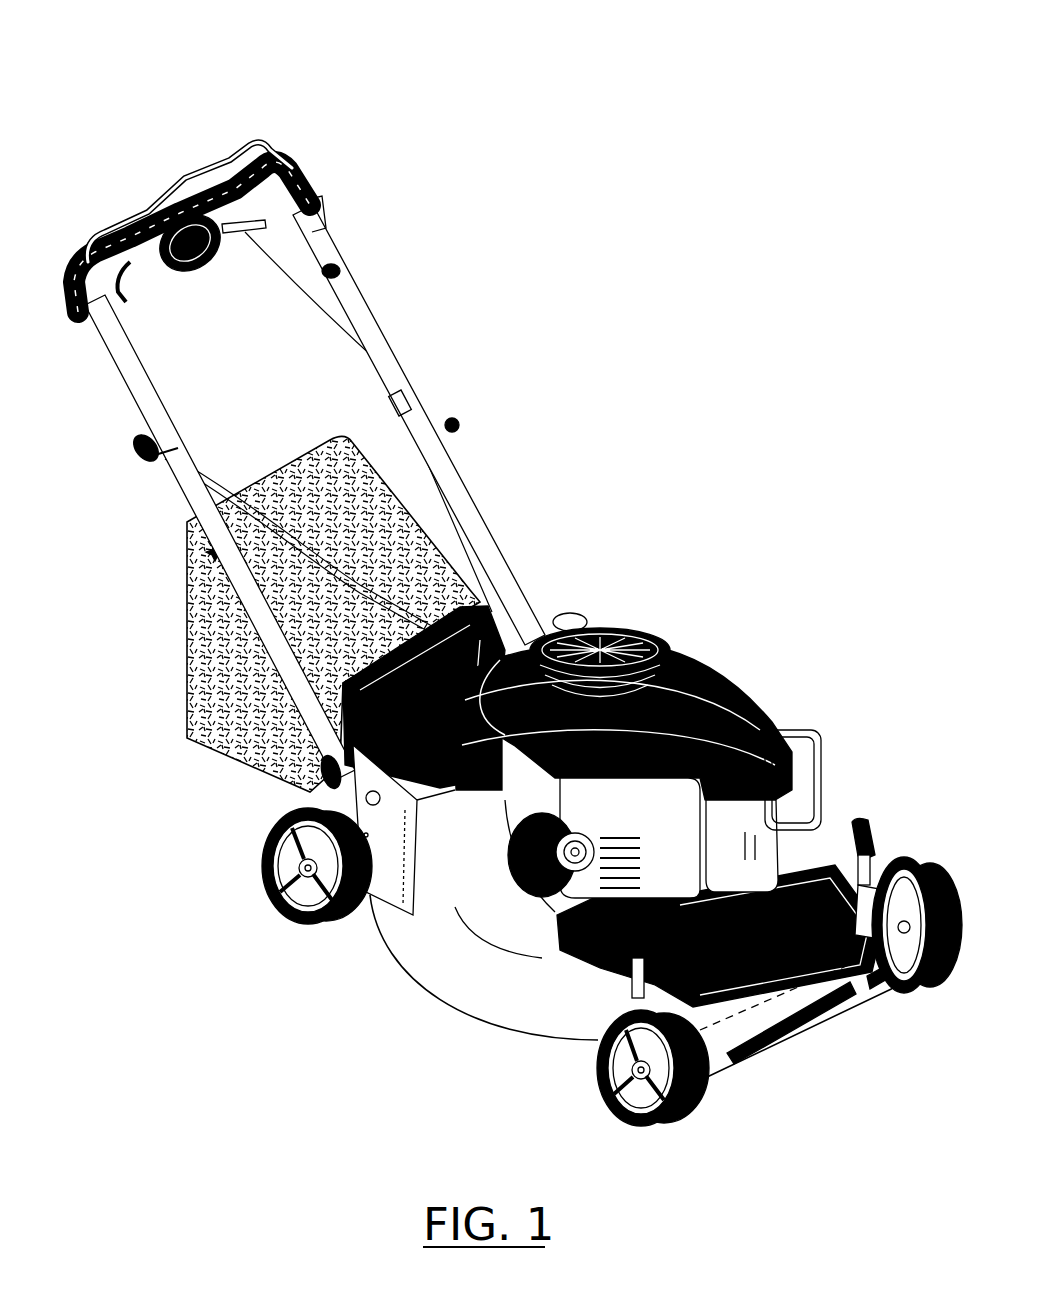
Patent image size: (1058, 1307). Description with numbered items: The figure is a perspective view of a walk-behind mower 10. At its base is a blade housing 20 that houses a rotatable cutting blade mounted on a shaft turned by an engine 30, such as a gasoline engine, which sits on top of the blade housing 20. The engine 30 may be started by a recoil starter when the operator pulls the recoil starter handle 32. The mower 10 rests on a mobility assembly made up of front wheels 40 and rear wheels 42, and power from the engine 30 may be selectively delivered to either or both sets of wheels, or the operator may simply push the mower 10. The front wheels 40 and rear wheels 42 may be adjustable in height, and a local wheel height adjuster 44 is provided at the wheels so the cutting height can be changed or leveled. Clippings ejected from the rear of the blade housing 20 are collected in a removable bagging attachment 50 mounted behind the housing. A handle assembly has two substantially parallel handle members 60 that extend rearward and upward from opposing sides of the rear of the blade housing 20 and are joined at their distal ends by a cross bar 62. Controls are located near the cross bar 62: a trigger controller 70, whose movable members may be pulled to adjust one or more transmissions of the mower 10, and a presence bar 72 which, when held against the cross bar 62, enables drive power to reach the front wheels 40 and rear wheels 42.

The mower 10 is at (735, 96).
The blade housing 20 is at (807, 990).
The engine 30 is at (722, 795).
The recoil starter handle 32 is at (140, 457).
The front wheels 40 is at (629, 1110).
The rear wheels 42 is at (283, 905).
The local wheel height adjuster 44 is at (320, 773).
The bagging attachment 50 is at (182, 663).
The handle members 60 is at (363, 307).
The cross bar 62 is at (230, 177).
The trigger controller 70 is at (120, 333).
The presence bar 72 is at (258, 147).